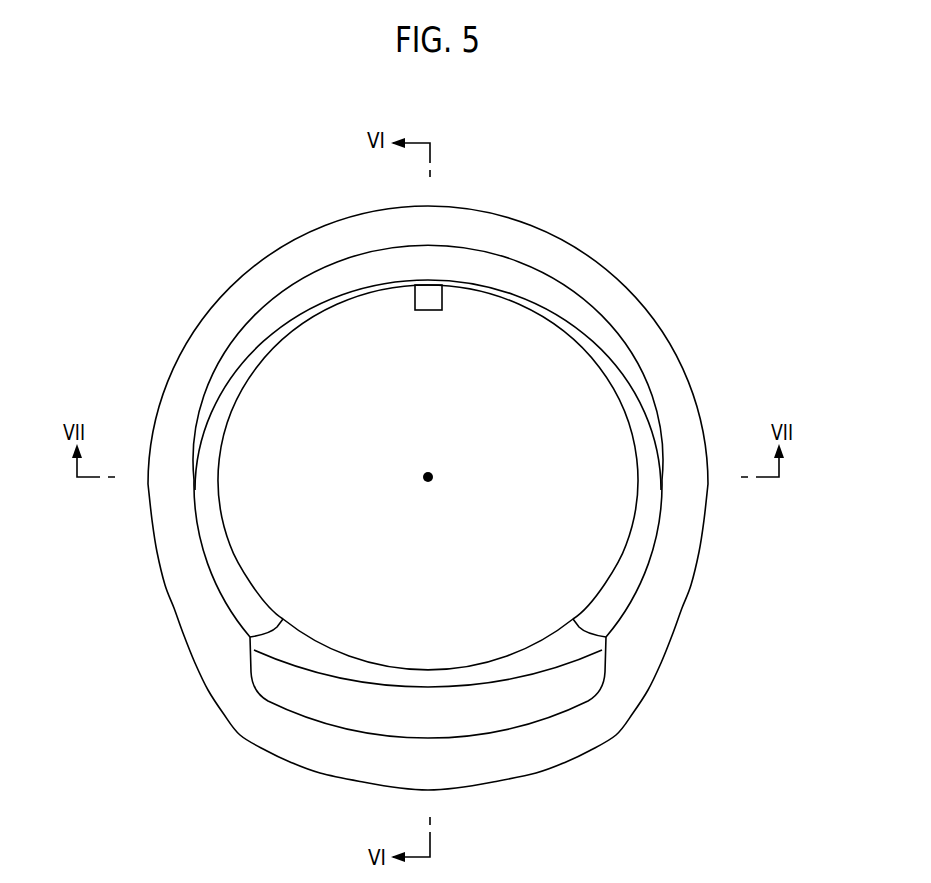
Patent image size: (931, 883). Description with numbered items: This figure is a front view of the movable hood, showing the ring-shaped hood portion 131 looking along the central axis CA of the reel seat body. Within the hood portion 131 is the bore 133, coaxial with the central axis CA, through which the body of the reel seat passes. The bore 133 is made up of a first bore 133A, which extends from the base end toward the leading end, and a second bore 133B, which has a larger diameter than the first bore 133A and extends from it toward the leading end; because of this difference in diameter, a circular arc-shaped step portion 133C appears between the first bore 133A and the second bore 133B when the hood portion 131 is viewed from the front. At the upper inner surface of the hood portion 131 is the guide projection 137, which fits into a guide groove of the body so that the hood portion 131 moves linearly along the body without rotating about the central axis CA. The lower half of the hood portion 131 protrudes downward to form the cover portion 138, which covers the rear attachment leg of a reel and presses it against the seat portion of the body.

The hood portion 131 is at (186, 298).
The bore 133 is at (494, 449).
The first bore 133A is at (564, 356).
The second bore 133B is at (560, 284).
The step portion 133C is at (315, 308).
The guide projection 137 is at (428, 297).
The cover portion 138 is at (532, 750).
The central axis CA is at (450, 485).